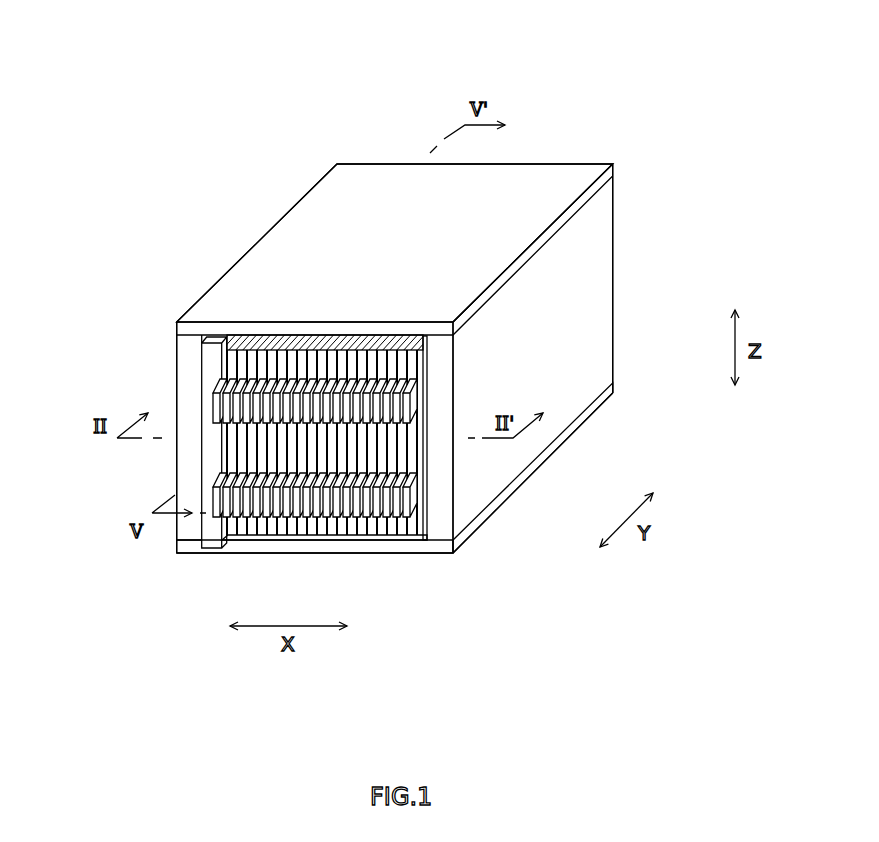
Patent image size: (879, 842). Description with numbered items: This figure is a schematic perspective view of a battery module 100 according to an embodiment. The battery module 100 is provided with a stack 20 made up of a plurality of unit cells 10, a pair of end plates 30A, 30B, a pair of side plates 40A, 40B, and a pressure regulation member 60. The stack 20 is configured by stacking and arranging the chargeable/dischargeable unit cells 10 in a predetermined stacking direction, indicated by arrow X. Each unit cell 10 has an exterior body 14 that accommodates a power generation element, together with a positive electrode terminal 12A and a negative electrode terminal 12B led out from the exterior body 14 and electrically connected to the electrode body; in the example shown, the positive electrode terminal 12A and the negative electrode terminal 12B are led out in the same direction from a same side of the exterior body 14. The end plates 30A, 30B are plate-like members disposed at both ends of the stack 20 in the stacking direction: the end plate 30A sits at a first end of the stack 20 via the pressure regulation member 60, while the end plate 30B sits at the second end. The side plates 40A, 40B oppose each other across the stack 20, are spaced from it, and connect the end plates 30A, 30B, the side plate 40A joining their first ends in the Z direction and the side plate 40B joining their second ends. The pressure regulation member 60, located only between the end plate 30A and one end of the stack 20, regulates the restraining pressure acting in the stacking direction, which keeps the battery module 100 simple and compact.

The battery module 100 is at (643, 61).
The side plate 40A is at (360, 172).
The side plate 40B is at (228, 553).
The end plate 30A is at (176, 367).
The end plate 30B is at (613, 358).
The pressure regulation member 60 is at (213, 340).
The unit cell 10 is at (402, 530).
The stack 20 is at (373, 540).
The exterior body 14 is at (422, 443).
The positive electrode terminal 12A is at (418, 402).
The negative electrode terminal 12B is at (418, 507).